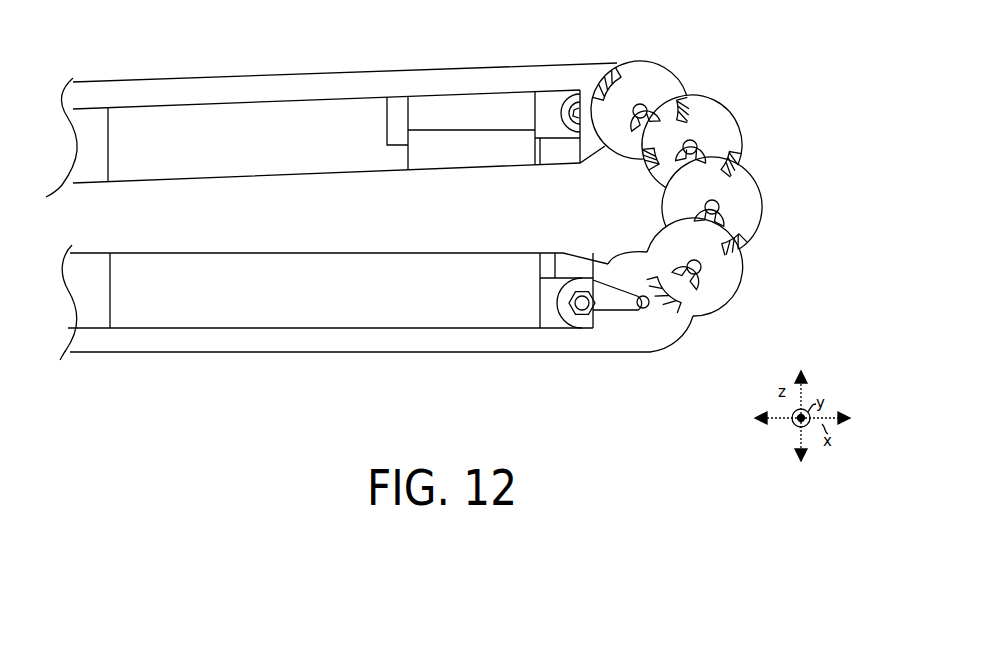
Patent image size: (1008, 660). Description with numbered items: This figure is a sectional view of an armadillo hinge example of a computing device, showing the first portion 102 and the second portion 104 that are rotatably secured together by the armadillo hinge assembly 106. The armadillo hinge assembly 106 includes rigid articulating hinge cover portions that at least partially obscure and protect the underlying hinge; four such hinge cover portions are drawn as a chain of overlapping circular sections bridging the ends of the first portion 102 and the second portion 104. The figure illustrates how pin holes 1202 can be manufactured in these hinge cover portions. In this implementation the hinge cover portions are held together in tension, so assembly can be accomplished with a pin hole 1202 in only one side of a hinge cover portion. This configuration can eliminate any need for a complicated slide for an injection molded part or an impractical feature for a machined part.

The first portion 102 is at (268, 160).
The second portion 104 is at (267, 308).
The armadillo hinge assembly 106 is at (628, 168).
The pin hole 1202 is at (587, 152).